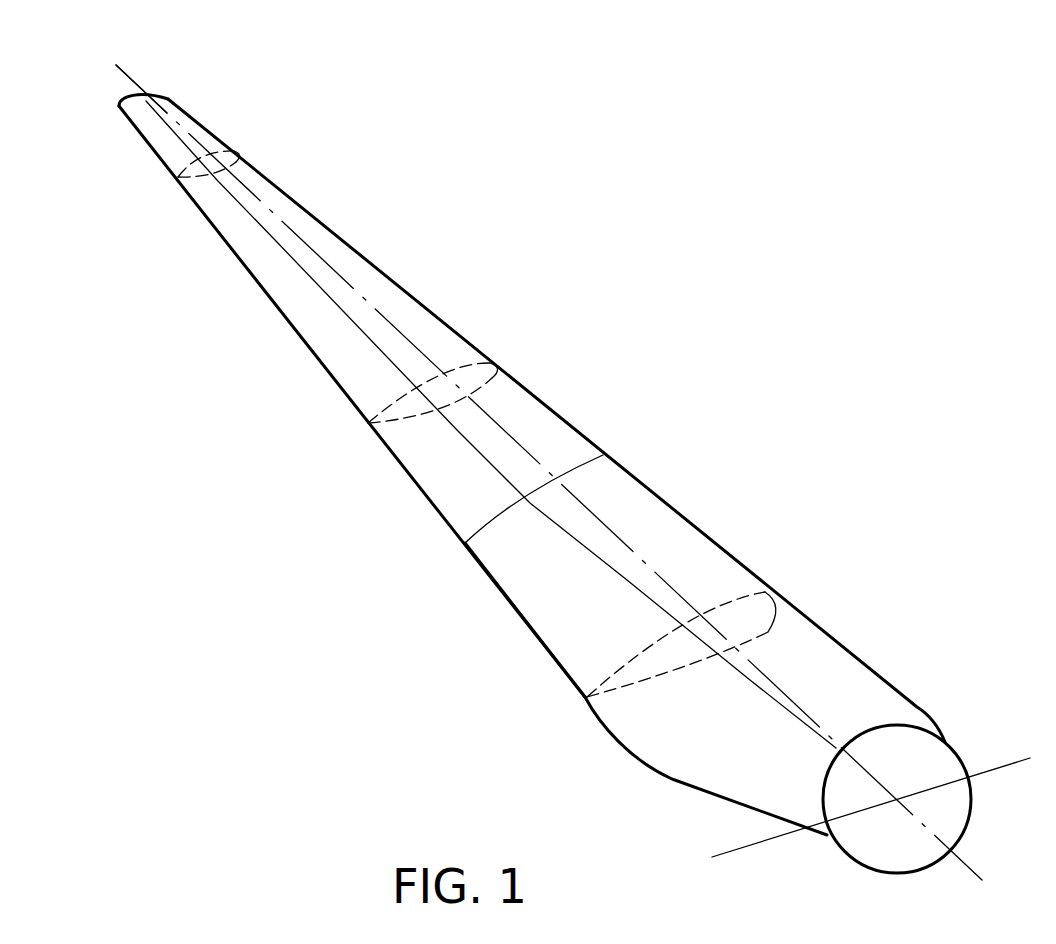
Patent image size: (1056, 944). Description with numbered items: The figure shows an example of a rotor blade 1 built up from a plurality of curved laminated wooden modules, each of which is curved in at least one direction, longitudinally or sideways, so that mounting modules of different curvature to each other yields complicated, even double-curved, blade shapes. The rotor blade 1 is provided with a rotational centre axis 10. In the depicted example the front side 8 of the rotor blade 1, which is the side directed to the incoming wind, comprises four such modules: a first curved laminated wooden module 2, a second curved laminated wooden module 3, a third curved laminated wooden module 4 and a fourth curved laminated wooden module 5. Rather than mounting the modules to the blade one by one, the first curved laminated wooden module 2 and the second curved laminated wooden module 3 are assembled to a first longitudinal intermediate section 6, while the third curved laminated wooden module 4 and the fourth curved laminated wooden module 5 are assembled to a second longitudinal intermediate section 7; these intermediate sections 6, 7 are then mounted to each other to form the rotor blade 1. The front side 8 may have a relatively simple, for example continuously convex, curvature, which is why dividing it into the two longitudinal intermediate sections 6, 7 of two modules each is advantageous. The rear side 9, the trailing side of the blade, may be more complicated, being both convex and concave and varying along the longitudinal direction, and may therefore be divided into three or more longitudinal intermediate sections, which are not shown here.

The rotor blade 1 is at (642, 305).
The first curved laminated wooden module 2 is at (313, 315).
The second curved laminated wooden module 3 is at (557, 600).
The third curved laminated wooden module 4 is at (378, 290).
The fourth curved laminated wooden module 5 is at (835, 688).
The first longitudinal intermediate section 6 is at (108, 91).
The second longitudinal intermediate section 7 is at (149, 81).
The front side 8 is at (673, 550).
The rear side 9 is at (630, 795).
The rotational centre axis 10 is at (970, 865).